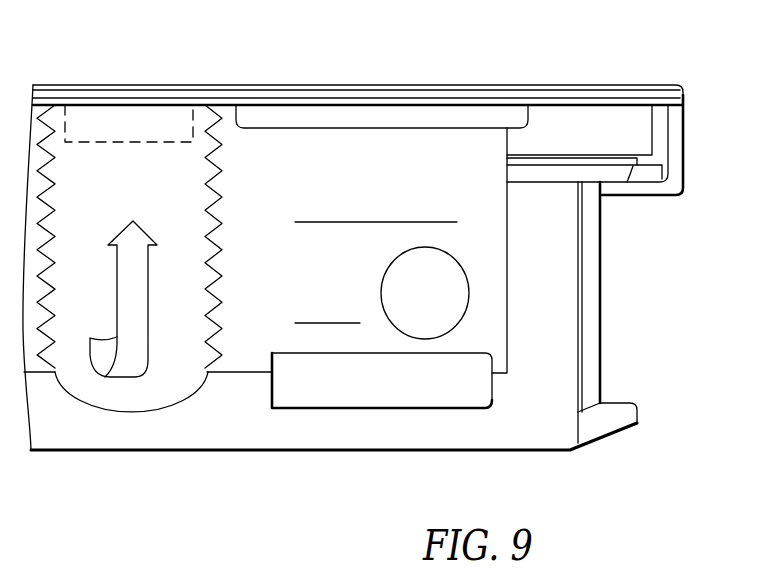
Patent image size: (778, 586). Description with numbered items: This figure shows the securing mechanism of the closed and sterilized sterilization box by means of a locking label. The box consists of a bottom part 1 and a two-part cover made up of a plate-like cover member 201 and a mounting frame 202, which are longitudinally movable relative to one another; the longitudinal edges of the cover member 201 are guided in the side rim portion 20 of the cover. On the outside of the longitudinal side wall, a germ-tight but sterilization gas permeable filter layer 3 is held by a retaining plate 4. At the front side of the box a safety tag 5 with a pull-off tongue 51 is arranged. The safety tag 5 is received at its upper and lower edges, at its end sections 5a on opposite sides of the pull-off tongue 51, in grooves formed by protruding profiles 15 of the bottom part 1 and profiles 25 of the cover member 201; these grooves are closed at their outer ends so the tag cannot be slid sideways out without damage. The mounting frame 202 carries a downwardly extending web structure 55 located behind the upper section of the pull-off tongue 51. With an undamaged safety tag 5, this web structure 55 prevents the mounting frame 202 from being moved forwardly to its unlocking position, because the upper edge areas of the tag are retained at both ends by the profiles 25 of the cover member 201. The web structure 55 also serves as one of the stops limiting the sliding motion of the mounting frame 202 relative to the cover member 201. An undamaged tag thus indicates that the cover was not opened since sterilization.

The bottom part 1 is at (565, 357).
The filter layer 3 is at (582, 262).
The retaining plate 4 is at (593, 315).
The safety tag 5 is at (161, 390).
The end sections 5a is at (375, 165).
The protruding profiles 15 is at (307, 375).
The side rim portion 20 is at (676, 141).
The profiles of the cover portion 25 is at (432, 115).
The pull-off tongue 51 is at (157, 160).
The web structure 55 is at (87, 116).
The cover member 201 is at (553, 130).
The mounting frame 202 is at (632, 97).